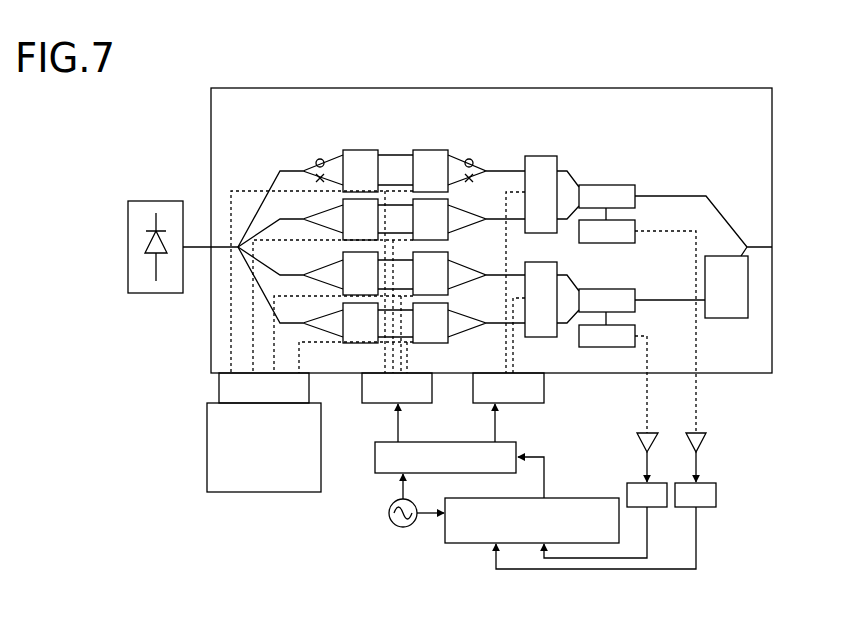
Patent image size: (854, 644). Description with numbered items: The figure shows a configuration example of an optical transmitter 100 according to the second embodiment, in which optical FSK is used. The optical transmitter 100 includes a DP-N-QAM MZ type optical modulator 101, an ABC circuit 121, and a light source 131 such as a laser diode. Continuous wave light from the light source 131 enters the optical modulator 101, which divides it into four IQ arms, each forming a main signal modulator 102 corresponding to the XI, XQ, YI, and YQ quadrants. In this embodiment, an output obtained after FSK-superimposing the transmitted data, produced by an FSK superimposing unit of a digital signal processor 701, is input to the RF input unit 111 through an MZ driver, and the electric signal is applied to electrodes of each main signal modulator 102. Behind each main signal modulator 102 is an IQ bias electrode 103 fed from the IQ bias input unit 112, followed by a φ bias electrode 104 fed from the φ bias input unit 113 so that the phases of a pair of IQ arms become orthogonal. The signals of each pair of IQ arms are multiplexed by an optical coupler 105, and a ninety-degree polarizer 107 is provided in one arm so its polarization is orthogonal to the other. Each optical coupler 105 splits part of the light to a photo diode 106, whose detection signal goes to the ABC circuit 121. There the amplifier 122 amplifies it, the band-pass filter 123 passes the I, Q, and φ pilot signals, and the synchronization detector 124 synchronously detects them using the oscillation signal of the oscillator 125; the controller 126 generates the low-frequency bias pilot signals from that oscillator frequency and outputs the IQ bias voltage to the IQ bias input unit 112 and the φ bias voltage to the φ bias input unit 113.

The optical transmitter 100 is at (608, 75).
The optical modulator 101 is at (715, 88).
The main signal modulator 102 is at (364, 143).
The IQ bias electrode 103 is at (430, 143).
The φ bias electrode 104 is at (539, 143).
The optical coupler 105 is at (635, 185).
The photo diode 106 is at (608, 243).
The 90° polarizer 107 is at (713, 318).
The RF input unit 111 is at (219, 398).
The IQ bias input unit 112 is at (418, 403).
The φ bias input unit 113 is at (530, 403).
The ABC circuit 121 is at (781, 392).
The amplifier 122 is at (722, 442).
The band-pass filter 123 is at (722, 493).
The synchronization detector 124 is at (478, 498).
The oscillator 125 is at (390, 511).
The controller 126 is at (375, 455).
The light source 131 is at (158, 201).
The digital signal processor 701 is at (280, 492).